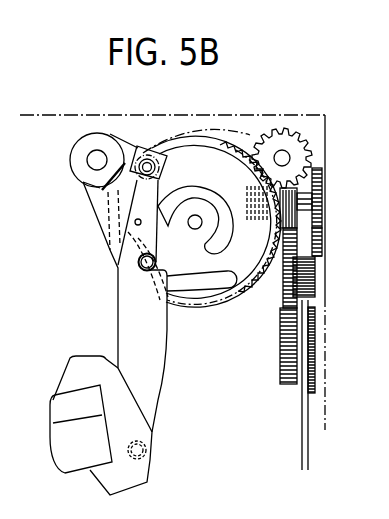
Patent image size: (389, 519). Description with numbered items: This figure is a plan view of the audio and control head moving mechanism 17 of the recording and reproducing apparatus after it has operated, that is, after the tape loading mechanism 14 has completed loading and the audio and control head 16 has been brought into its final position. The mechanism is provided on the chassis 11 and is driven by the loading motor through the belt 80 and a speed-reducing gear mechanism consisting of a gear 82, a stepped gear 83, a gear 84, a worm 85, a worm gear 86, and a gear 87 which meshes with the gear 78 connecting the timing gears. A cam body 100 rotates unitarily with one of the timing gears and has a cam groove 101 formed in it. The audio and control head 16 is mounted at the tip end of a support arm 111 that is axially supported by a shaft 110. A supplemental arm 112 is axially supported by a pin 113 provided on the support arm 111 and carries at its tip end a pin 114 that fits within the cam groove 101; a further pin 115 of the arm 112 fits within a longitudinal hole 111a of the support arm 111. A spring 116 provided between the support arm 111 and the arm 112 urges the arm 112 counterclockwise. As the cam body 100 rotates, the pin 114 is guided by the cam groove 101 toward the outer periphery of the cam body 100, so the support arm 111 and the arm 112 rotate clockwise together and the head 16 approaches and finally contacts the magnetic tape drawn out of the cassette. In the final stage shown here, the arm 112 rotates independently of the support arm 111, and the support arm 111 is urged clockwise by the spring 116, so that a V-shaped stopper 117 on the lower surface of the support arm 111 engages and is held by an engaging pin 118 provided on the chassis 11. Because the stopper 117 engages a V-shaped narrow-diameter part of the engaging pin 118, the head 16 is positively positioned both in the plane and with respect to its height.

The chassis 11 is at (47, 112).
The tape loading mechanism 14 is at (329, 234).
The audio and control head 16 is at (50, 438).
The audio and control head moving mechanism 17 is at (126, 136).
The gear 78 is at (243, 147).
The belt 80 is at (302, 429).
The gear 82 is at (280, 353).
The stepped gear 83 is at (317, 276).
The gear 84 is at (316, 244).
The worm 85 is at (318, 198).
The worm gear 86 is at (326, 142).
The gear 87 is at (292, 130).
The cam body 100 is at (250, 281).
The cam groove 101 is at (214, 191).
The shaft 110 is at (97, 150).
The support arm 111 is at (165, 333).
The longitudinal hole 111a is at (195, 222).
The supplemental arm 112 is at (169, 166).
The pin 113 is at (148, 143).
The pin 114 is at (139, 262).
The pin 115 is at (128, 236).
The spring 116 is at (103, 200).
The V-shaped stopper 117 is at (146, 447).
The engaging pin 118 is at (129, 460).